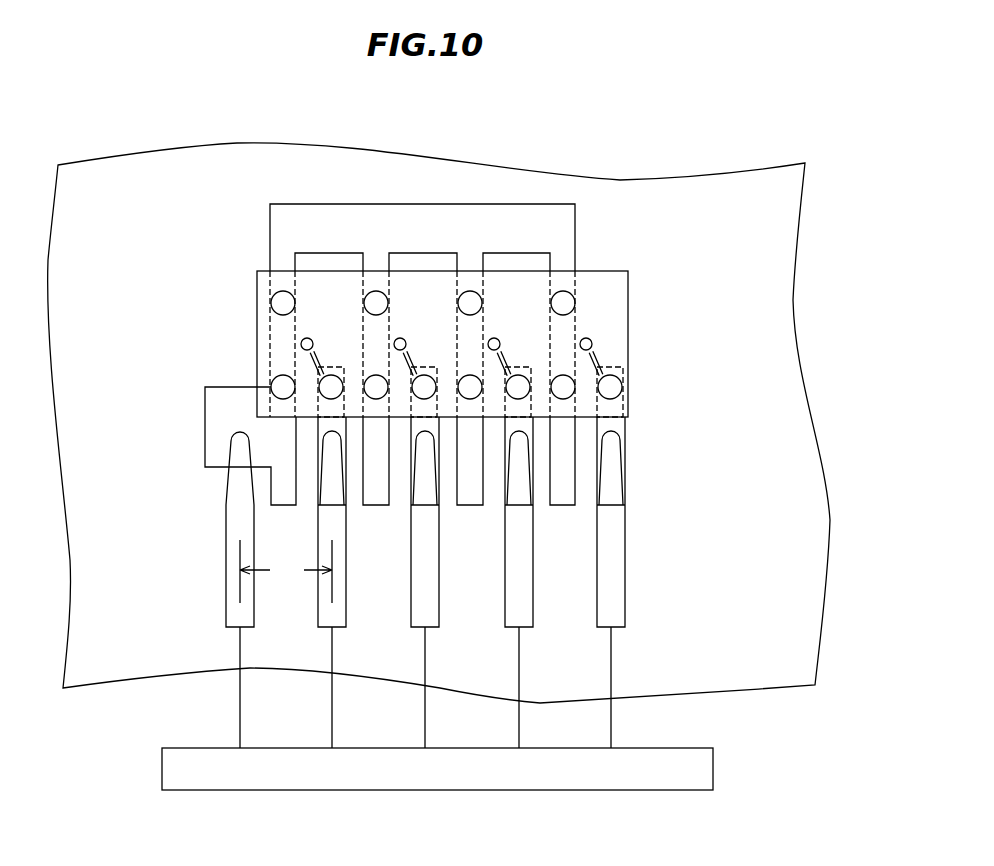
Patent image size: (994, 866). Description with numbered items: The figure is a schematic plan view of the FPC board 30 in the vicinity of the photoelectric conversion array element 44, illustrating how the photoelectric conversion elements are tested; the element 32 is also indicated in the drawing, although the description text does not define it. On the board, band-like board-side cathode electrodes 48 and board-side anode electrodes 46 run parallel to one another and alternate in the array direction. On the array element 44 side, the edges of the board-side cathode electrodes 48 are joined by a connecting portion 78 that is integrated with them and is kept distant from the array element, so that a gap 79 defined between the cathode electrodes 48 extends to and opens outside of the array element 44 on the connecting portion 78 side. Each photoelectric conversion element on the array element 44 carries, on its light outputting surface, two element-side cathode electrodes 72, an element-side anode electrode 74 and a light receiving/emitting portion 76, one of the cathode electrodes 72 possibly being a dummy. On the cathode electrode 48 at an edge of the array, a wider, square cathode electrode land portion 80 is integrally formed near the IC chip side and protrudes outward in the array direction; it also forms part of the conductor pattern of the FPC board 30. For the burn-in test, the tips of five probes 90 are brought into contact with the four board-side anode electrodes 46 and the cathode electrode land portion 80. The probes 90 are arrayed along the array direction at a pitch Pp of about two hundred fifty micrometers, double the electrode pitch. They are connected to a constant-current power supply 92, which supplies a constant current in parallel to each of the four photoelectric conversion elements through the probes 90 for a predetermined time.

The FPC board 30 is at (439, 402).
The circuit board 32 is at (688, 212).
The photoelectric conversion array element 44 is at (629, 271).
The board-side anode electrode 46 is at (345, 422).
The board-side cathode electrode 48 is at (370, 264).
The element-side cathode electrode 72 is at (567, 293).
The element-side anode electrode 74 is at (571, 397).
The light receiving/emitting portion 76 is at (592, 345).
The connecting portion 78 is at (422, 194).
The gap 79 is at (405, 260).
The cathode electrode land portion 80 is at (205, 387).
The probe 90 is at (625, 565).
The constant-current power supply 92 is at (713, 765).
The pitch of the probes Pp is at (286, 571).